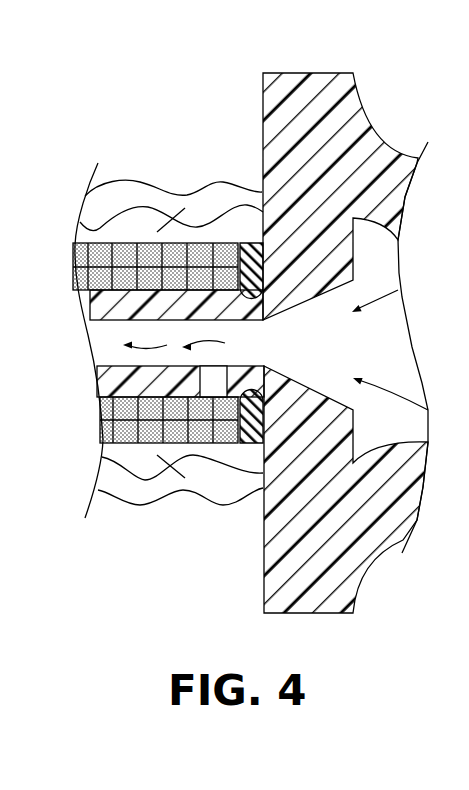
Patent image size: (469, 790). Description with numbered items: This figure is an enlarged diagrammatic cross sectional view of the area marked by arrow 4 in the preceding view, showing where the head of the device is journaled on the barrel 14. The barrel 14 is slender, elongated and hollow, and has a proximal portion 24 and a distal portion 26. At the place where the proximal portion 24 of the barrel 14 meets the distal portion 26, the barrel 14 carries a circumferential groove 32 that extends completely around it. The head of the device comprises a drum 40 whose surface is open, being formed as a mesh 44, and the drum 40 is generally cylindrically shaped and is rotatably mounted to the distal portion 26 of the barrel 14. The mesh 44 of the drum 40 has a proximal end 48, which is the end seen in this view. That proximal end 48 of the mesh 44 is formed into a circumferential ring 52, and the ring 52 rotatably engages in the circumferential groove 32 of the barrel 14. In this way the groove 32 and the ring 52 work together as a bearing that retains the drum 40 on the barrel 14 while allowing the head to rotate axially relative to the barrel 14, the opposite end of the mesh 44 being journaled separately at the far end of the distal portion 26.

The proximal portion 24 is at (258, 102).
The barrel 14 is at (258, 137).
The distal portion 26 is at (221, 280).
The drum 40 is at (120, 417).
The mesh 44 is at (103, 412).
The circumferential ring 52 is at (240, 283).
The proximal end 48 is at (255, 433).
The circumferential groove 32 is at (232, 290).
The arrow 4 is at (131, 483).